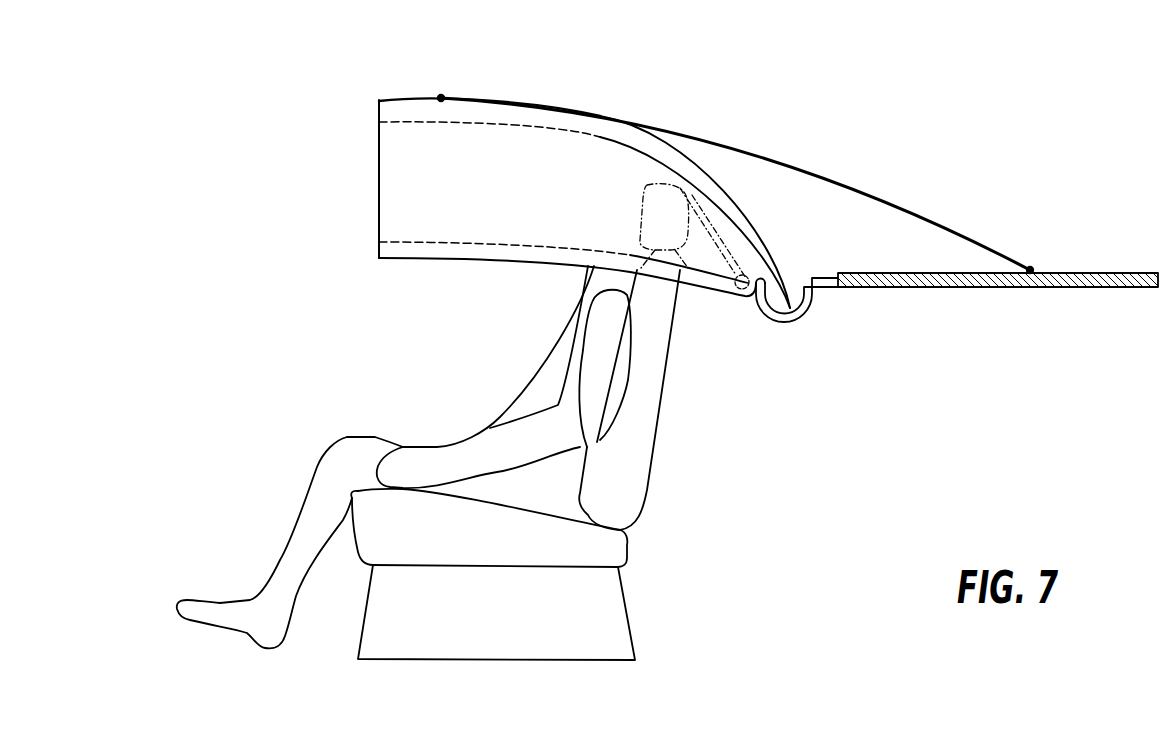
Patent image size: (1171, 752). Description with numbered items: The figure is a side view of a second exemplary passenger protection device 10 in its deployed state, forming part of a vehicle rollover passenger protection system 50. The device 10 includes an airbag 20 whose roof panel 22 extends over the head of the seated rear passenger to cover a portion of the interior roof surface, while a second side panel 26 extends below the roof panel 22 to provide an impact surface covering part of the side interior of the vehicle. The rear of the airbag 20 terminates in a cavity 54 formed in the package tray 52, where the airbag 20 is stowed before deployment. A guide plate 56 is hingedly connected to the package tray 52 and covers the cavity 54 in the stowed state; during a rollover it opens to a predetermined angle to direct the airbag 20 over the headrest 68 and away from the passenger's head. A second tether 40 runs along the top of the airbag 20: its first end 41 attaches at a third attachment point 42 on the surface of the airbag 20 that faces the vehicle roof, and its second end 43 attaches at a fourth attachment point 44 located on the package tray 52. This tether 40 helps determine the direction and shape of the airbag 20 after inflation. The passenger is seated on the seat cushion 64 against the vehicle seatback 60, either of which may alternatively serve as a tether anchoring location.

The passenger protection device 10 is at (781, 257).
The airbag 20 is at (765, 230).
The roof panel 22 is at (413, 107).
The second side panel 26 is at (397, 177).
The second tether 40 is at (895, 203).
The first end 41 is at (487, 72).
The third attachment point 42 is at (446, 94).
The second end 43 is at (1080, 216).
The fourth attachment point 44 is at (1032, 270).
The vehicle rollover passenger protection system 50 is at (210, 135).
The package tray 52 is at (1098, 273).
The cavity 54 is at (815, 305).
The guide plate 56 is at (708, 240).
The vehicle seatback 60 is at (628, 453).
The seat cushion 64 is at (542, 555).
The headrest 68 is at (670, 197).